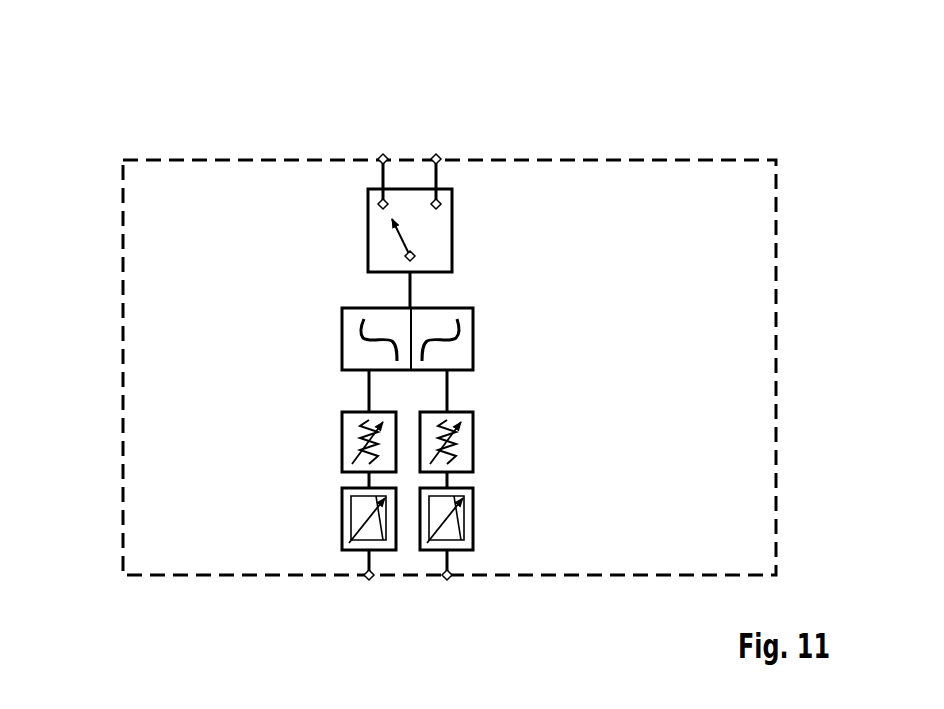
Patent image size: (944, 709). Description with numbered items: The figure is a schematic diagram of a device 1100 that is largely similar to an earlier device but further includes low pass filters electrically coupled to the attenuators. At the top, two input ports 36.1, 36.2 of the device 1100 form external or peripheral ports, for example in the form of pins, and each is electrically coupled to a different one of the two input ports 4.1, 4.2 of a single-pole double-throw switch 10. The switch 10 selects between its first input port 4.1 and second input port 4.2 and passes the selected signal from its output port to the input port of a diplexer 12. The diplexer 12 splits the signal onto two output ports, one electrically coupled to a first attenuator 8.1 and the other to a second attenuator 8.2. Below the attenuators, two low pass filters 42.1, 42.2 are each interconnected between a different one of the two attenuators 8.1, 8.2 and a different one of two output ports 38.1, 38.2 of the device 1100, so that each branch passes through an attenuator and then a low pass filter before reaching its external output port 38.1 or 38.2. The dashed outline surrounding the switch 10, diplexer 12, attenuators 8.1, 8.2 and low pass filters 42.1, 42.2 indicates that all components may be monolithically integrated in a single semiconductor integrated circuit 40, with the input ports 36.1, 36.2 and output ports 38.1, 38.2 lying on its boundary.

The device 1100 is at (158, 104).
The single semiconductor integrated circuit 40 is at (776, 338).
The single-pole double-throw switch 10 is at (452, 262).
The first input port 4.1 is at (378, 205).
The second input port 4.2 is at (441, 203).
The input port 36.1 is at (383, 155).
The input port 36.2 is at (436, 155).
The diplexer 12 is at (473, 340).
The first attenuator 8.1 is at (342, 436).
The second attenuator 8.2 is at (473, 433).
The low pass filter 42.1 is at (342, 518).
The low pass filter 42.2 is at (473, 526).
The output port 38.1 is at (365, 580).
The output port 38.2 is at (450, 580).